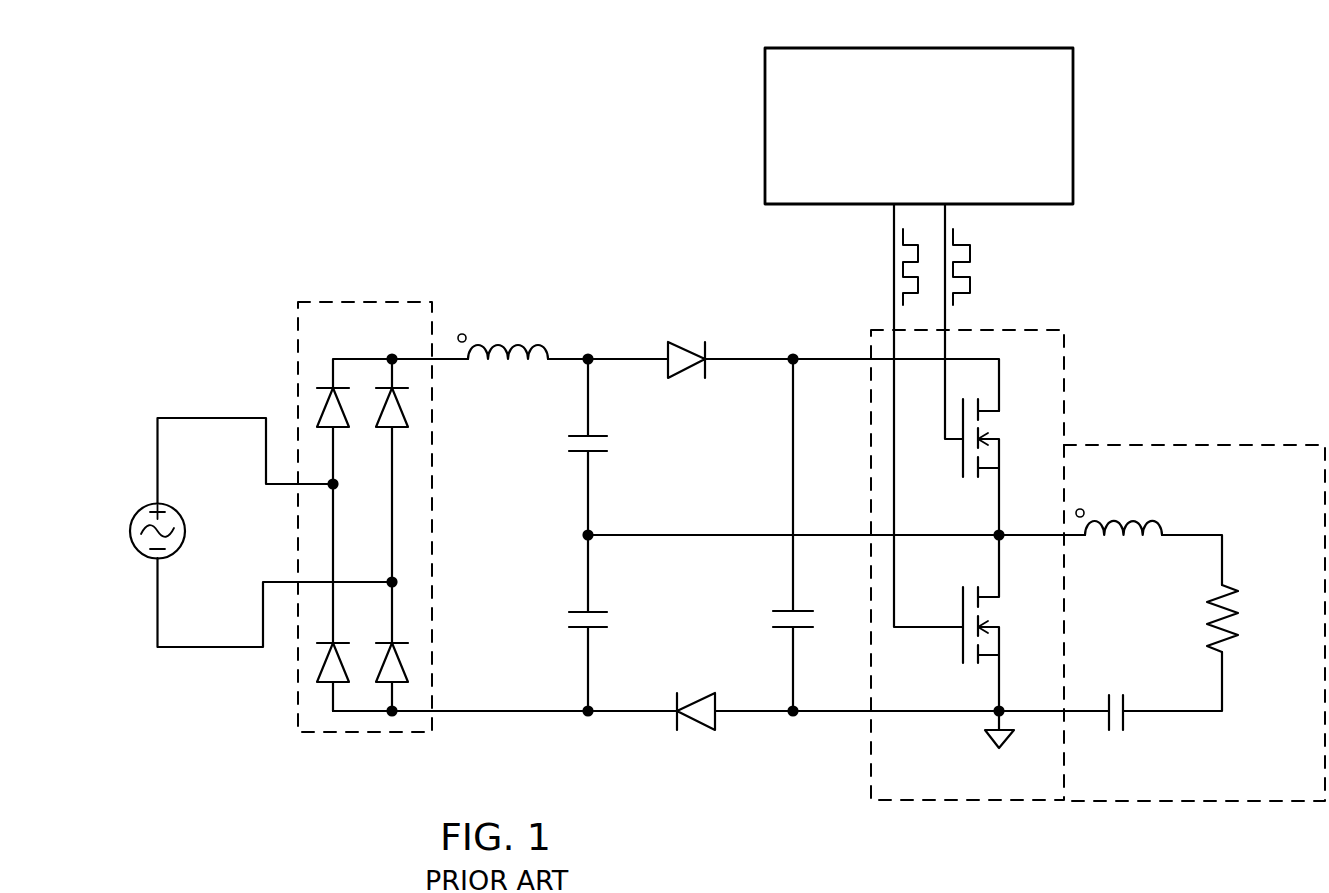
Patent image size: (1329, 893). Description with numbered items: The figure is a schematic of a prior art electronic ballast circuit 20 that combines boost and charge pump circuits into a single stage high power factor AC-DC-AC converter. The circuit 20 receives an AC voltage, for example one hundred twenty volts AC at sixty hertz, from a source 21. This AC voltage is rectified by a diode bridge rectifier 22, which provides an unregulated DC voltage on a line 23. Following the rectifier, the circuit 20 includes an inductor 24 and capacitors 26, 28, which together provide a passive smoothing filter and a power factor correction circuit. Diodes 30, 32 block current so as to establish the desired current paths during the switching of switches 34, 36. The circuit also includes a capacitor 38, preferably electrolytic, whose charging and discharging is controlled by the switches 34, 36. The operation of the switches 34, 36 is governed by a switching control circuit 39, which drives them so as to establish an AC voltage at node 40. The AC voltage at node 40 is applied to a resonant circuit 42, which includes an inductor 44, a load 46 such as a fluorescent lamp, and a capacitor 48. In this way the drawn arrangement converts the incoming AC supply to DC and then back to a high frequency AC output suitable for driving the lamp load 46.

The electronic ballast circuit 20 is at (1193, 108).
The source 21 is at (143, 505).
The diode bridge rectifier 22 is at (328, 735).
The line 23 is at (390, 356).
The inductor 24 is at (520, 346).
The capacitor 26 is at (578, 452).
The capacitor 28 is at (578, 610).
The diode 30 is at (676, 374).
The diode 32 is at (703, 697).
The switch 34 is at (996, 440).
The switch 36 is at (996, 628).
The capacitor 38 is at (798, 610).
The switching control circuit 39 is at (1002, 48).
The node 40 is at (995, 534).
The resonant circuit 42 is at (1203, 445).
The inductor 44 is at (1135, 522).
The load 46 is at (1232, 590).
The capacitor 48 is at (1125, 703).